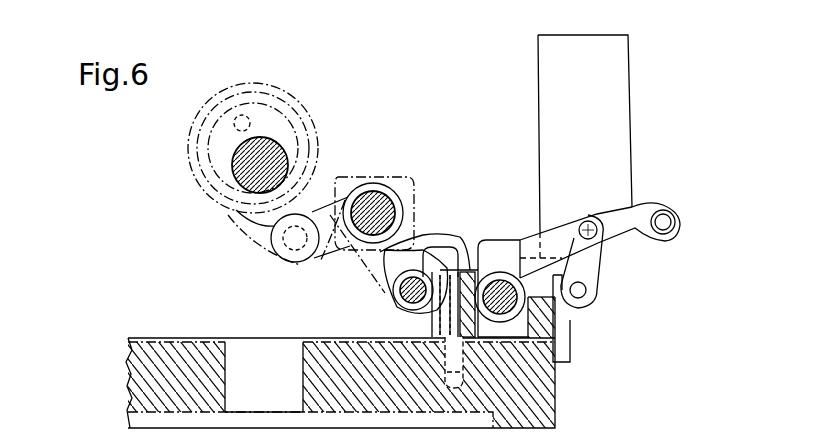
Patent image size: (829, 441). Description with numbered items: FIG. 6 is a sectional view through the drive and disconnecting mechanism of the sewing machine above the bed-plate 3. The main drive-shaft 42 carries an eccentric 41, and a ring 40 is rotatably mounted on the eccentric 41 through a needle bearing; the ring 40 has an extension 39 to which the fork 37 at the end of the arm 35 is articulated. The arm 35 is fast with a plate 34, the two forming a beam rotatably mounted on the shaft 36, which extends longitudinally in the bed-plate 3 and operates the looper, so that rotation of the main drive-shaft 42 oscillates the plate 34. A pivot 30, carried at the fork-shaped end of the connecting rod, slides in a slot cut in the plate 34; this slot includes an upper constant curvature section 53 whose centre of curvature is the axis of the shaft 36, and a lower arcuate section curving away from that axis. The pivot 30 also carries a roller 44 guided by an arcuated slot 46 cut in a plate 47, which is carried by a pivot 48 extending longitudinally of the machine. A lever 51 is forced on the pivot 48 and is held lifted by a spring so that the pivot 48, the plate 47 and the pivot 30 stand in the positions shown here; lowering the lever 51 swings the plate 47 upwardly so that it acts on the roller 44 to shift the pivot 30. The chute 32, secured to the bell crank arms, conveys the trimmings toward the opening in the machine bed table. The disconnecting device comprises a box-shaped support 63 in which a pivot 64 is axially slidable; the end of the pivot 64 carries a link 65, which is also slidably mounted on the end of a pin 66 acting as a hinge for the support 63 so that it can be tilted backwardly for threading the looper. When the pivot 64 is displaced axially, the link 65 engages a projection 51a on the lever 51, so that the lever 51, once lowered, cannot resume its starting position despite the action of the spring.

The bed-plate 3 is at (540, 392).
The pivot 30 is at (395, 307).
The chute 32 is at (270, 252).
The plate 34 is at (442, 195).
The arm 35 is at (338, 183).
The shaft 36 is at (385, 182).
The fork 37 is at (283, 262).
The extension 39 is at (272, 223).
The ring 40 is at (192, 148).
The eccentric 41 is at (273, 123).
The main drive-shaft 42 is at (273, 157).
The roller 44 is at (398, 289).
The arcuated slot 46 is at (380, 297).
The plate 47 is at (407, 280).
The pivot 48 is at (570, 325).
The lever 51 is at (645, 212).
The projection 51a is at (553, 222).
The upper constant curvature section 53 is at (443, 220).
The support 63 is at (612, 107).
The pivot 64 is at (597, 222).
The link 65 is at (600, 258).
The pin 66 is at (590, 295).